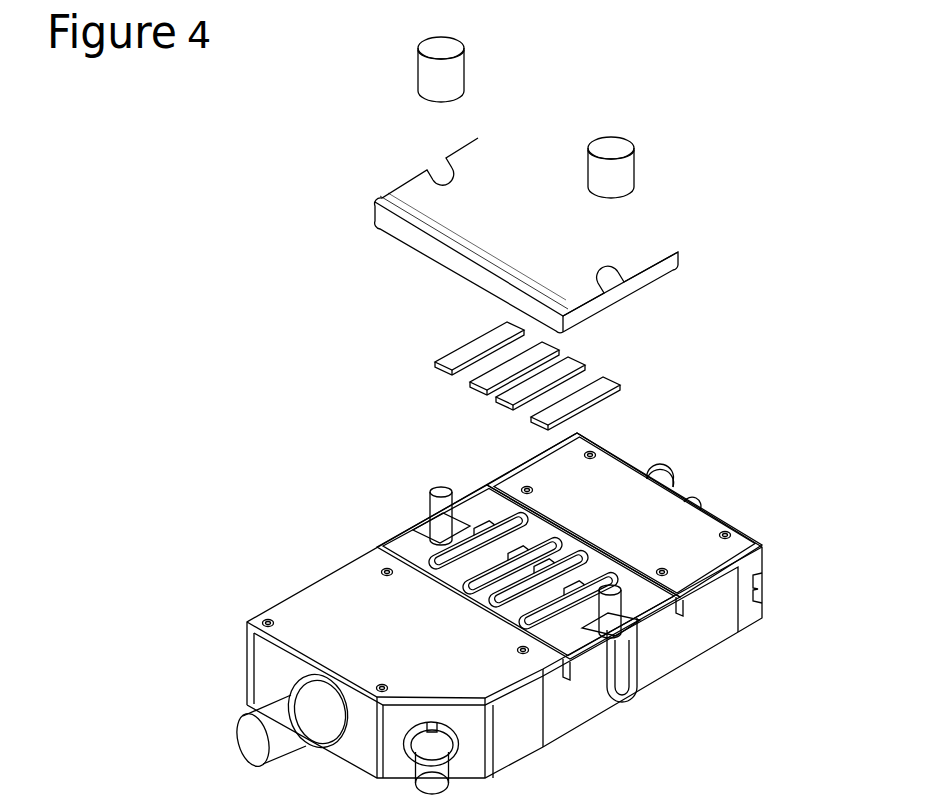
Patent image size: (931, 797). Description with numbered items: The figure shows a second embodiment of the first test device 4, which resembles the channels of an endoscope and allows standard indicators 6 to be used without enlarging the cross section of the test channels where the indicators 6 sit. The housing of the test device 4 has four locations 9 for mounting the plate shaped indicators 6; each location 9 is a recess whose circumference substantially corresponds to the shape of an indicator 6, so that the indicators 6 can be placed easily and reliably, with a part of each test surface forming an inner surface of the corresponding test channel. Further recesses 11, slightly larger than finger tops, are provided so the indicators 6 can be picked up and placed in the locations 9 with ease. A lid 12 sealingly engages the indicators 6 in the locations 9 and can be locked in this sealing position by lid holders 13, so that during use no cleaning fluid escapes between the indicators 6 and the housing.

The first test device 4 is at (340, 440).
The indicators 6 is at (452, 341).
The locations 9 is at (530, 515).
The further recesses 11 is at (450, 548).
The lid 12 is at (422, 270).
The lid holders 13 is at (400, 78).